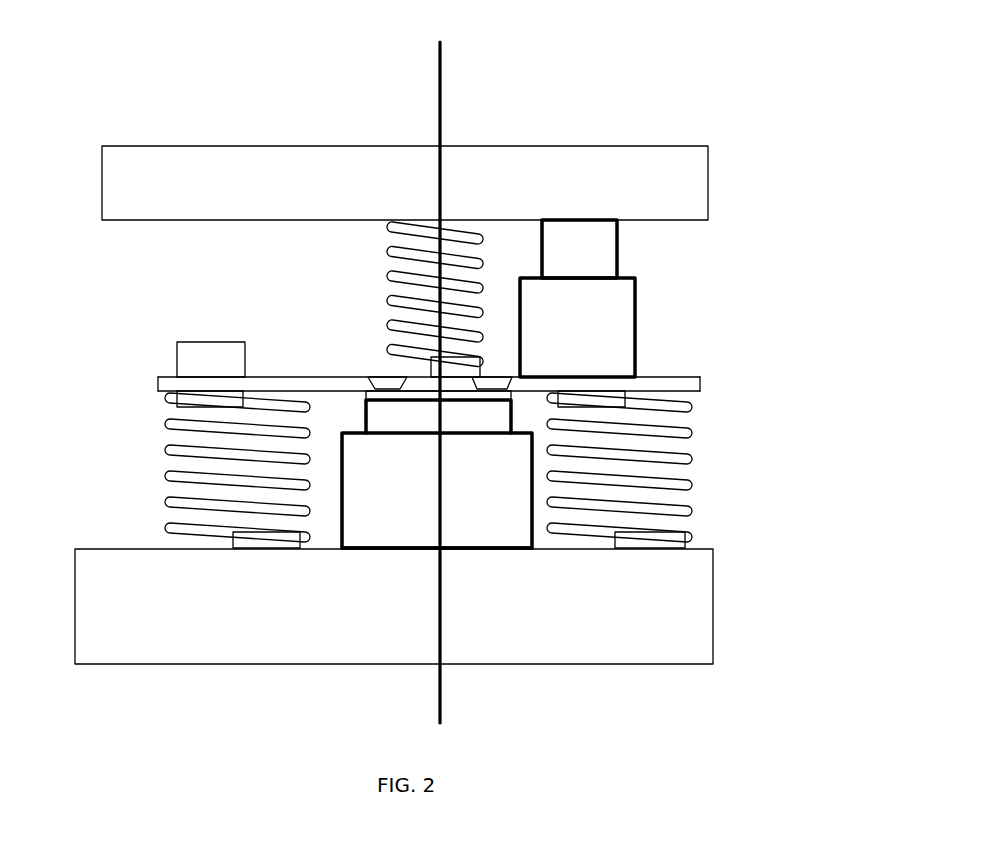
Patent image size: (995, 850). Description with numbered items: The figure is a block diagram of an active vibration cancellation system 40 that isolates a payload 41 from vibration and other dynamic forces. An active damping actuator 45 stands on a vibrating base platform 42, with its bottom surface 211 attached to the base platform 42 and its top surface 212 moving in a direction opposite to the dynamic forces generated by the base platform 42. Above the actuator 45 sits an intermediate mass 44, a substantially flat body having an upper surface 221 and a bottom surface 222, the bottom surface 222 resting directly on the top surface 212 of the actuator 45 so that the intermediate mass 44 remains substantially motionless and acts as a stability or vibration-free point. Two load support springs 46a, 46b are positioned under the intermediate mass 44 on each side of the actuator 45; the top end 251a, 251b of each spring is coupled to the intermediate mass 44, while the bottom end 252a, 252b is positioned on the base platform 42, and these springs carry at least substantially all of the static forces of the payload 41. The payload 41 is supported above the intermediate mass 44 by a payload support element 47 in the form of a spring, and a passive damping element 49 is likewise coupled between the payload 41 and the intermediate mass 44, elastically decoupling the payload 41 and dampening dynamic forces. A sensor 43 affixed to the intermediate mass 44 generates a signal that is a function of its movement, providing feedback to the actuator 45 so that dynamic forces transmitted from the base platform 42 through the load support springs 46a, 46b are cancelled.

The active vibration cancellation system 40 is at (160, 118).
The payload 41 is at (628, 145).
The base platform 42 is at (100, 665).
The sensor 43 is at (188, 340).
The intermediate mass 44 is at (465, 371).
The active damping actuator 45 is at (519, 567).
The load support spring 46a is at (186, 469).
The load support spring 46b is at (659, 469).
The payload support element 47 is at (387, 300).
The passive damping element 49 is at (635, 293).
The bottom surface 211 is at (363, 550).
The top surface 212 is at (368, 377).
The upper surface 221 is at (682, 377).
The bottom surface 222 is at (627, 392).
The top end 251a is at (172, 405).
The top end 251b is at (692, 402).
The bottom end 252a is at (170, 530).
The bottom end 252b is at (687, 540).